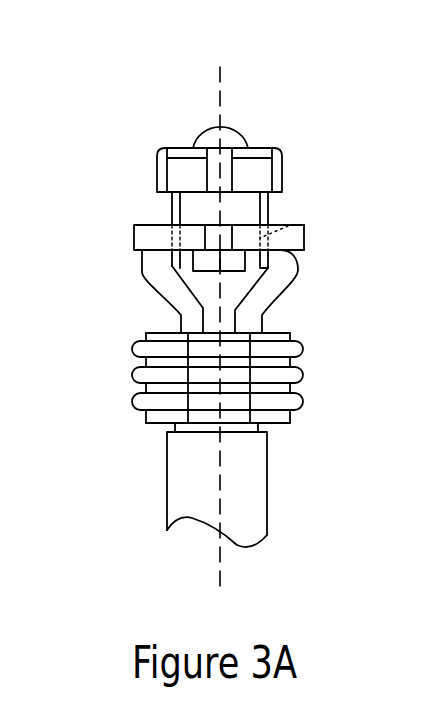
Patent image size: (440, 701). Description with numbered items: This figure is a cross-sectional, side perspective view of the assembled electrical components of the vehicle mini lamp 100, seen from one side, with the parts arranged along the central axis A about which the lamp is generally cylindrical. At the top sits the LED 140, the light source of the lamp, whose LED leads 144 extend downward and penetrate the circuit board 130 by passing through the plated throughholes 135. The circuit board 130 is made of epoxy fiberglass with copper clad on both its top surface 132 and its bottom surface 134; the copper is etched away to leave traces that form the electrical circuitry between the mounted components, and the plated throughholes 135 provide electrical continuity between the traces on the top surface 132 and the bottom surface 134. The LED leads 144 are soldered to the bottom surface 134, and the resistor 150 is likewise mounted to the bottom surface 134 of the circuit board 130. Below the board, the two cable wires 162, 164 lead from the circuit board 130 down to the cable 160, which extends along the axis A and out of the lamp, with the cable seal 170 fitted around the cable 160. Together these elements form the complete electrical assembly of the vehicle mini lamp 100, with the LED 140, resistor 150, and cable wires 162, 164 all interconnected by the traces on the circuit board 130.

The vehicle mini lamp 100 is at (333, 98).
The circuit board 130 is at (145, 232).
The top surface 132 is at (296, 225).
The bottom surface 134 is at (294, 266).
The throughholes 135 is at (289, 225).
The LED 140 is at (165, 148).
The LED leads 144 is at (173, 205).
The resistor 150 is at (202, 253).
The cable 160 is at (252, 500).
The cable wire 162 is at (177, 293).
The cable wire 164 is at (265, 288).
The cable seal 170 is at (142, 346).
The axis A is at (220, 80).